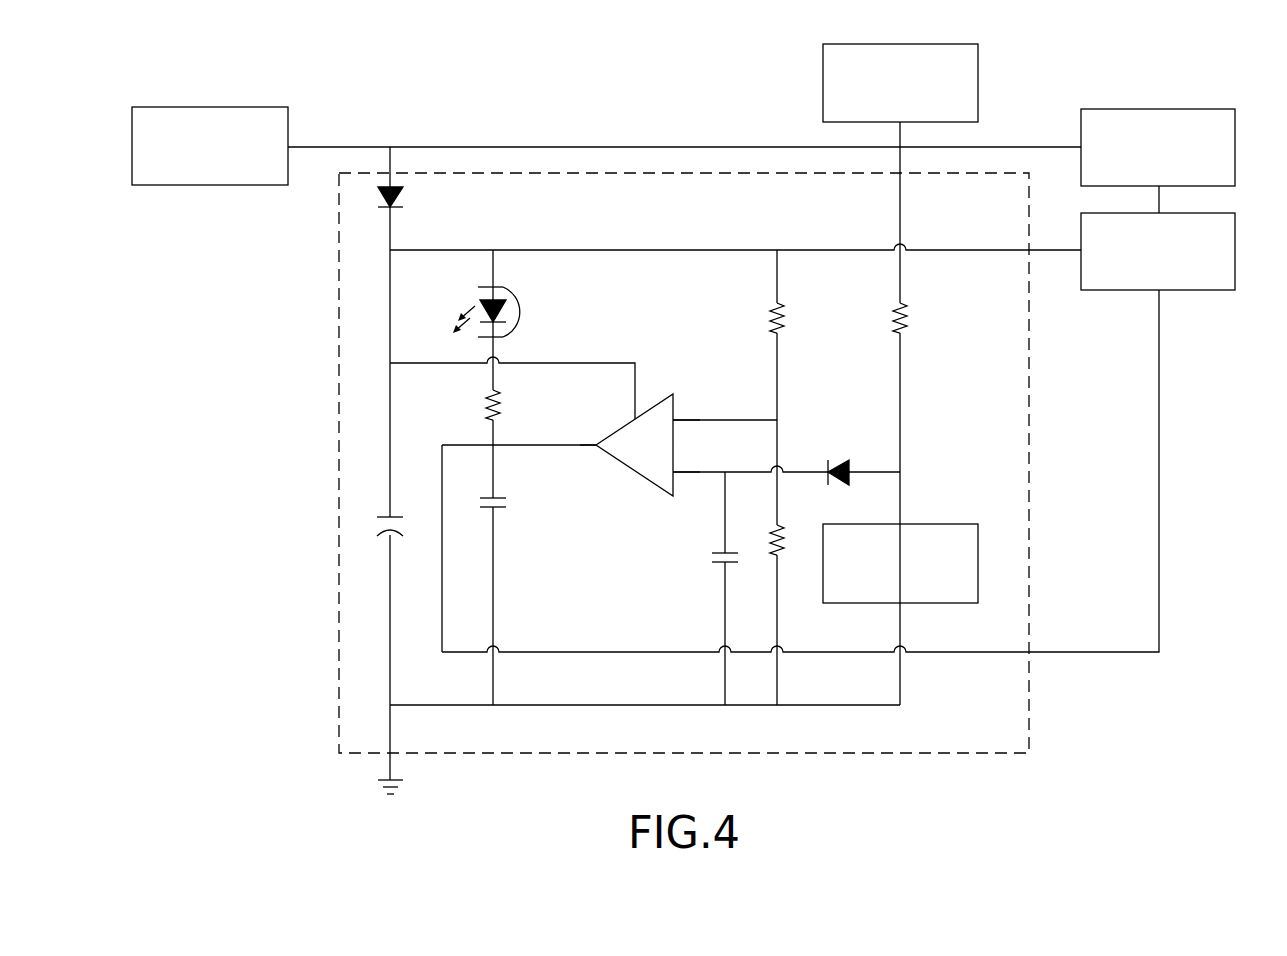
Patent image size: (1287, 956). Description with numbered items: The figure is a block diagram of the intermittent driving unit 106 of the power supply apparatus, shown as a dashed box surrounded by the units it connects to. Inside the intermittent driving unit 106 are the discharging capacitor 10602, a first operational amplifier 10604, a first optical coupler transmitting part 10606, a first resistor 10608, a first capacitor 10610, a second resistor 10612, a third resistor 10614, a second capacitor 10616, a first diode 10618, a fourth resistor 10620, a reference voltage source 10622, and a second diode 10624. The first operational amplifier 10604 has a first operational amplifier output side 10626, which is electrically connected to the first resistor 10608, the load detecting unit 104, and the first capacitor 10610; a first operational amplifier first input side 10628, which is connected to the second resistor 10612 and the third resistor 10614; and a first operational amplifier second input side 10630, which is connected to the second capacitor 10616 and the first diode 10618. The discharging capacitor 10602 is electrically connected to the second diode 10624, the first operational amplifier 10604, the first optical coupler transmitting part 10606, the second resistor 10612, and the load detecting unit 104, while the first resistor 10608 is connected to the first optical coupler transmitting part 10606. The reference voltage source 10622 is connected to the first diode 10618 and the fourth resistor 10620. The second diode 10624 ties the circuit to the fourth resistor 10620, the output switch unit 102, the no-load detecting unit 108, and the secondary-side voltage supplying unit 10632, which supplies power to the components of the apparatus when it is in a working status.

The output switch unit 102 is at (1159, 112).
The load detecting unit 104 is at (1183, 285).
The intermittent driving unit 106 is at (1029, 705).
The no-load detecting unit 108 is at (207, 107).
The discharging capacitor 10602 is at (403, 524).
The first operational amplifier 10604 is at (648, 412).
The first optical coupler transmitting part 10606 is at (518, 300).
The first resistor 10608 is at (503, 405).
The first capacitor 10610 is at (508, 503).
The second resistor 10612 is at (772, 318).
The third resistor 10614 is at (785, 545).
The second capacitor 10616 is at (714, 554).
The first diode 10618 is at (832, 458).
The fourth resistor 10620 is at (905, 320).
The reference voltage source 10622 is at (912, 524).
The second diode 10624 is at (405, 199).
The first operational amplifier output side 10626 is at (597, 449).
The first operational amplifier first input side 10628 is at (681, 418).
The first operational amplifier second input side 10630 is at (675, 495).
The secondary-side voltage supplying unit 10632 is at (823, 81).